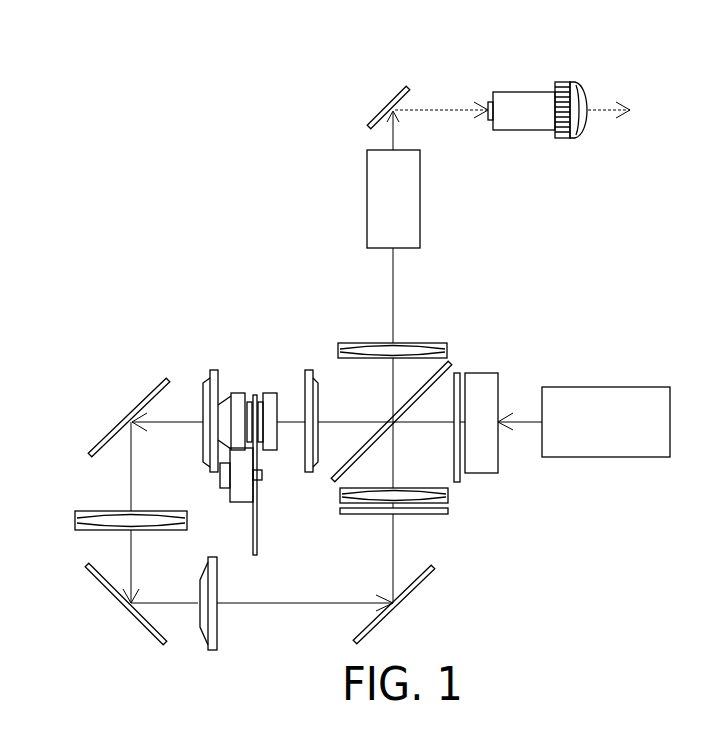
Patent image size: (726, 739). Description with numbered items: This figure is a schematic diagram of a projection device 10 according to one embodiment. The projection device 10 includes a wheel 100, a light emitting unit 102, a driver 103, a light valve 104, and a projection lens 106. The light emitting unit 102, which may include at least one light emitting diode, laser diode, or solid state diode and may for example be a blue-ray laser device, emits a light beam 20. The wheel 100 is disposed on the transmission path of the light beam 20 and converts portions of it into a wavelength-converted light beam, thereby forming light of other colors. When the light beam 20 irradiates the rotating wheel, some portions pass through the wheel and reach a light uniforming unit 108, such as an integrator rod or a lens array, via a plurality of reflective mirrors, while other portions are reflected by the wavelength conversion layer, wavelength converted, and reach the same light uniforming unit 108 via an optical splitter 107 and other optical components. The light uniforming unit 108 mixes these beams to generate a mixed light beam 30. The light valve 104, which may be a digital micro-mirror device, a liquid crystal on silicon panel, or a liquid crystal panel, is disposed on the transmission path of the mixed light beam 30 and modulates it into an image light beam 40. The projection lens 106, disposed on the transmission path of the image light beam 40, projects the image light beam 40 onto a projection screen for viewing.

The projection device 10 is at (83, 148).
The light beam 20 is at (527, 420).
The mixed light beam 30 is at (392, 138).
The image light beam 40 is at (442, 108).
The wheel 100 is at (255, 384).
The light emitting unit 102 is at (610, 405).
The driver 103 is at (240, 470).
The light valve 104 is at (382, 108).
The projection lens 106 is at (523, 110).
The optical splitter 107 is at (450, 362).
The light uniforming unit 108 is at (403, 202).